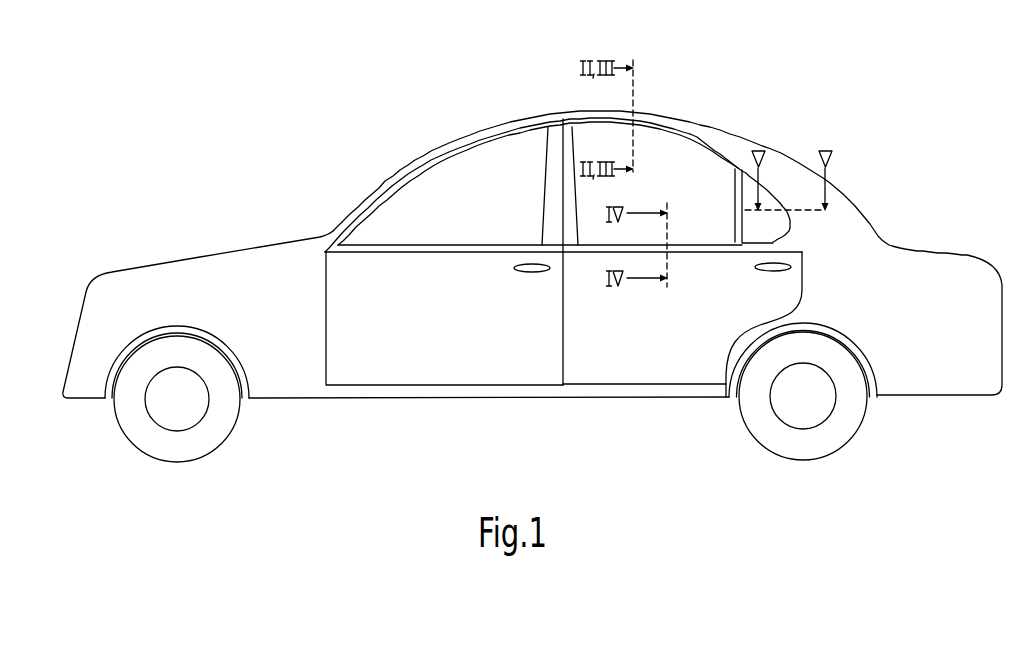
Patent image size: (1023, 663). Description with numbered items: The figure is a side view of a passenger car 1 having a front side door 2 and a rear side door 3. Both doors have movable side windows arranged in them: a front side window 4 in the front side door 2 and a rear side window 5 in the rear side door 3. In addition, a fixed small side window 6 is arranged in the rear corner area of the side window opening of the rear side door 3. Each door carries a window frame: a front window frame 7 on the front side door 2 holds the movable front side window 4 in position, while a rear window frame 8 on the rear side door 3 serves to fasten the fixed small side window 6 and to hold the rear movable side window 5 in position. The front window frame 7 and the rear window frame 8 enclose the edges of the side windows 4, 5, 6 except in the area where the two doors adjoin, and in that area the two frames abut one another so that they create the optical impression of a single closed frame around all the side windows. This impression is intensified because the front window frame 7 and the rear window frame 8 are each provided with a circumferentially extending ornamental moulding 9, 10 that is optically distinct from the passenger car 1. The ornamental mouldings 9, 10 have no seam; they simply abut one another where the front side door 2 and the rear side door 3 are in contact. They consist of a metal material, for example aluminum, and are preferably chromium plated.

The passenger car 1 is at (284, 85).
The front side door 2 is at (382, 373).
The rear side door 3 is at (621, 373).
The front side window 4 is at (437, 188).
The rear side window 5 is at (670, 153).
The fixed small side window 6 is at (767, 225).
The front window frame 7 is at (500, 134).
The rear window frame 8 is at (706, 145).
The ornamental moulding 9 is at (457, 152).
The ornamental moulding 10 is at (723, 140).